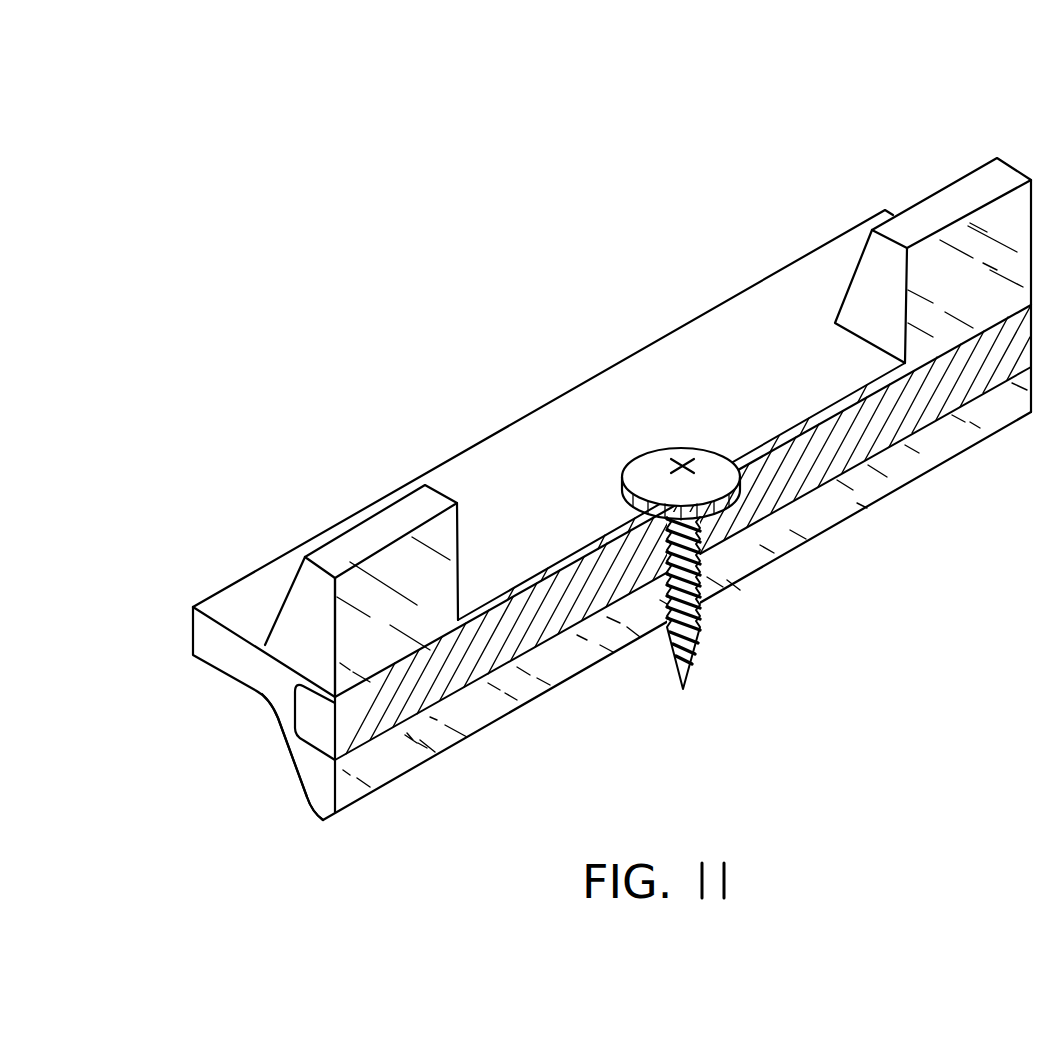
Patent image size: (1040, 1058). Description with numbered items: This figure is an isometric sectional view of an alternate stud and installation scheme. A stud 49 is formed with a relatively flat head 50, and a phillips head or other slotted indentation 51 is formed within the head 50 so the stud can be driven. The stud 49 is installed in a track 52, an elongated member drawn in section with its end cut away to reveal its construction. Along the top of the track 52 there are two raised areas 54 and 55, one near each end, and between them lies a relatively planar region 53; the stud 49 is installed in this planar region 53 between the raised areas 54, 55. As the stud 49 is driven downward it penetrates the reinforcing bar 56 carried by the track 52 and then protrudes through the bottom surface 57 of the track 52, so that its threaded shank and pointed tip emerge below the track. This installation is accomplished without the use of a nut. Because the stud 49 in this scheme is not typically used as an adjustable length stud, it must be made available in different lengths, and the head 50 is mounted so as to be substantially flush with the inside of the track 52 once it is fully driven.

The stud 49 is at (718, 649).
The head 50 is at (710, 473).
The indentation 51 is at (690, 468).
The track 52 is at (768, 272).
The planar region 53 is at (622, 388).
The raised area 54 is at (422, 510).
The raised area 55 is at (963, 197).
The reinforcing bar 56 is at (313, 720).
The bottom surface 57 is at (323, 820).